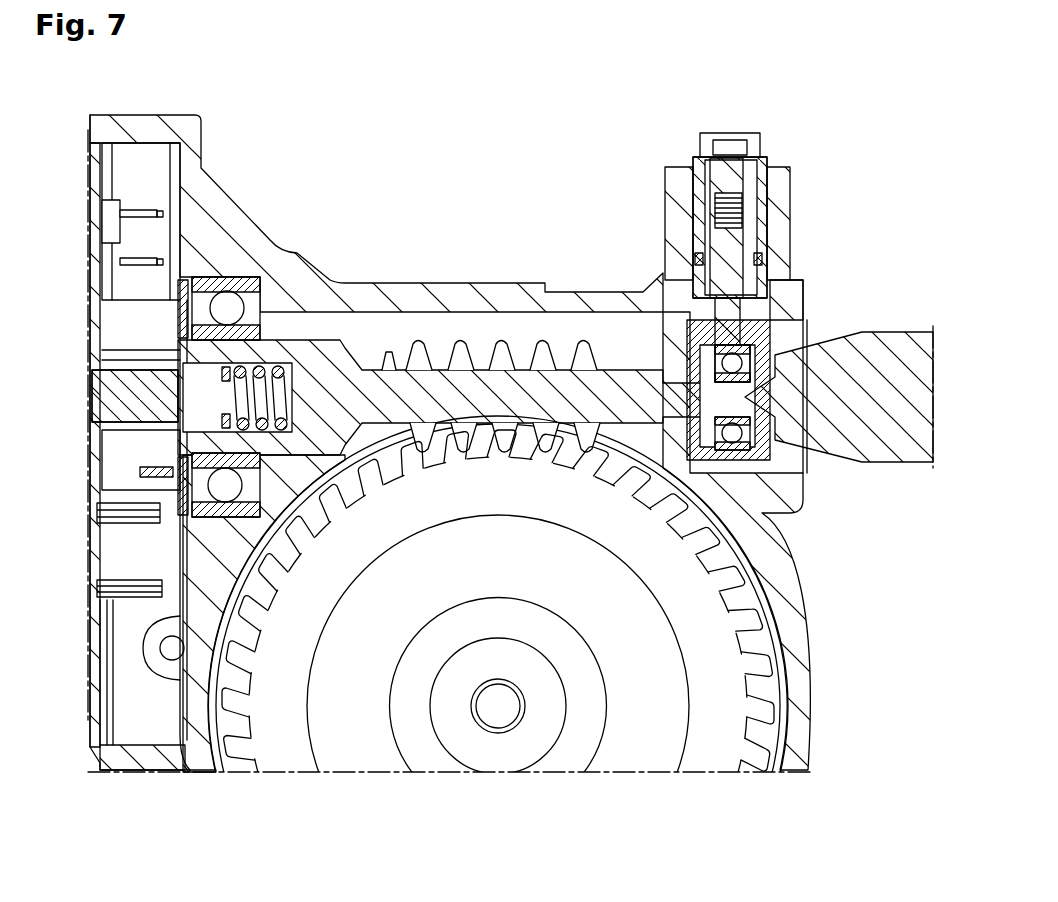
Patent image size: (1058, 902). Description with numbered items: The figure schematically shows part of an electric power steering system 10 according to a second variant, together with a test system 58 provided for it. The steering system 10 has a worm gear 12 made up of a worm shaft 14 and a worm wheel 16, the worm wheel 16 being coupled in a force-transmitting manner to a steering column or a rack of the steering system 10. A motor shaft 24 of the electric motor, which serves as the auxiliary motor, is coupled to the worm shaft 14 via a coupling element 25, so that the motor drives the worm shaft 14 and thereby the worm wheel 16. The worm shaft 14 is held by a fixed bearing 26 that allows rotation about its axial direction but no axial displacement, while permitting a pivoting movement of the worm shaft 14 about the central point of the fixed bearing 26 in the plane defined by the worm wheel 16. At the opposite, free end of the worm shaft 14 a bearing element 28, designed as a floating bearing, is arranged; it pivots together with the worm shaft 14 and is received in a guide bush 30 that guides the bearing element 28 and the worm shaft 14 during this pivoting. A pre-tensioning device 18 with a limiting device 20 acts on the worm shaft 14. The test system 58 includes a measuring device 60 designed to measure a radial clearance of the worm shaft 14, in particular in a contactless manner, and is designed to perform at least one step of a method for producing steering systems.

The electric power steering system 10 is at (306, 108).
The worm gear 12 is at (724, 490).
The worm shaft 14 is at (440, 390).
The worm wheel 16 is at (275, 737).
The pre-tensioning device 18 is at (733, 124).
The limiting device 20 is at (733, 124).
The motor shaft 24 is at (112, 382).
The coupling element 25 is at (185, 398).
The fixed bearing 26 is at (242, 278).
The bearing element 28 is at (760, 356).
The guide bush 30 is at (760, 356).
The test system 58 is at (839, 185).
The measuring device 60 is at (893, 440).